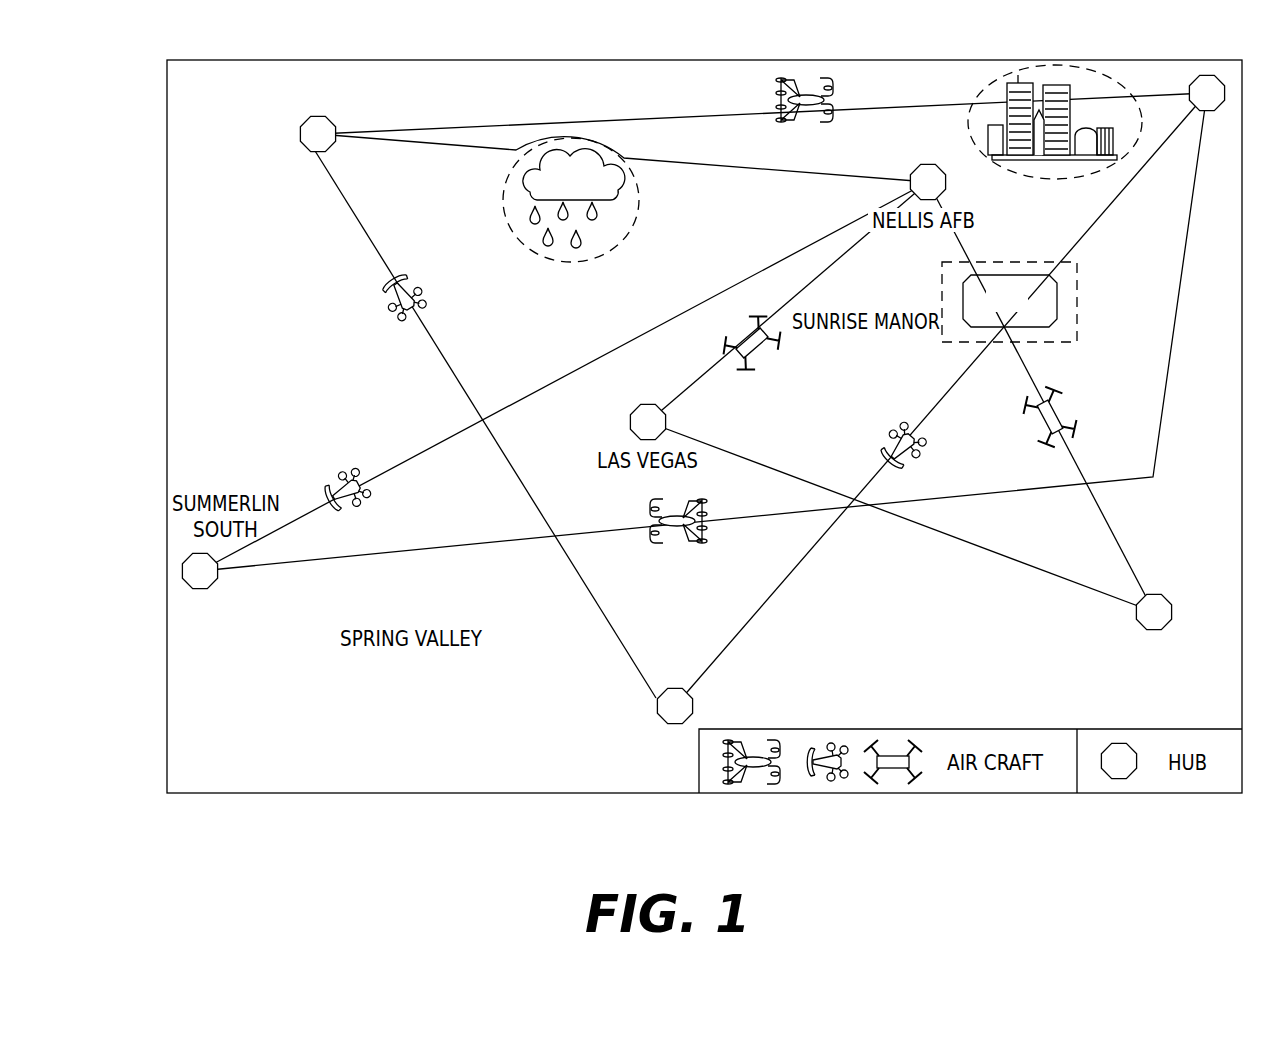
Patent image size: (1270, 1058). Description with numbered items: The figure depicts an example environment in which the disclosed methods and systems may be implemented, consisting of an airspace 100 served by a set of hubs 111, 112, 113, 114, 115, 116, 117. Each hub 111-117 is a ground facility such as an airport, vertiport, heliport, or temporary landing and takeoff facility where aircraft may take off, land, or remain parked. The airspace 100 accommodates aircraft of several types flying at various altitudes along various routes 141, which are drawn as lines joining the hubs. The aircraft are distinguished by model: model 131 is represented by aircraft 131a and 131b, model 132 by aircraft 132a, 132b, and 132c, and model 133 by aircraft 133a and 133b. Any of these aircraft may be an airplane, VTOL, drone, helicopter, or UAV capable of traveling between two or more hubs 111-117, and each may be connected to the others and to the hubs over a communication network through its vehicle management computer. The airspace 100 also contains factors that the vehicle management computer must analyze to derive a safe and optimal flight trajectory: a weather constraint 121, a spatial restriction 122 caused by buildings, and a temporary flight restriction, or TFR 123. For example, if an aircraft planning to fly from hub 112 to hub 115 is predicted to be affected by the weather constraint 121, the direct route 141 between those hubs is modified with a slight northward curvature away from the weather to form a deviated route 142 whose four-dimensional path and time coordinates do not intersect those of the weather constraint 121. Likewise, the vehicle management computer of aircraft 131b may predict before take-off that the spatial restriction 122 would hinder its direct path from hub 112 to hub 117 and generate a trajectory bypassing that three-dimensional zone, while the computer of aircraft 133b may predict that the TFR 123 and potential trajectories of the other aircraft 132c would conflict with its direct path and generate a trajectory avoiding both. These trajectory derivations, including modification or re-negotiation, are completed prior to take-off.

The airspace 100 is at (166, 126).
The hub 111 is at (212, 592).
The hub 112 is at (302, 127).
The hub 113 is at (652, 402).
The hub 114 is at (657, 710).
The hub 115 is at (928, 163).
The hub 116 is at (1156, 632).
The hub 117 is at (1211, 112).
The weather constraint 121 is at (617, 247).
The spatial restriction 122 is at (1037, 180).
The temporary flight restriction (TFR) 123 is at (1070, 268).
The aircraft model 131 is at (762, 777).
The aircraft 131a is at (668, 537).
The aircraft 131b is at (808, 74).
The aircraft model 132 is at (850, 778).
The aircraft 132a is at (355, 472).
The aircraft 132b is at (427, 288).
The aircraft 132c is at (918, 432).
The aircraft model 133 is at (917, 778).
The aircraft 133a is at (775, 355).
The aircraft 133b is at (1068, 393).
The route 141 is at (602, 120).
The deviated route 142 is at (733, 164).